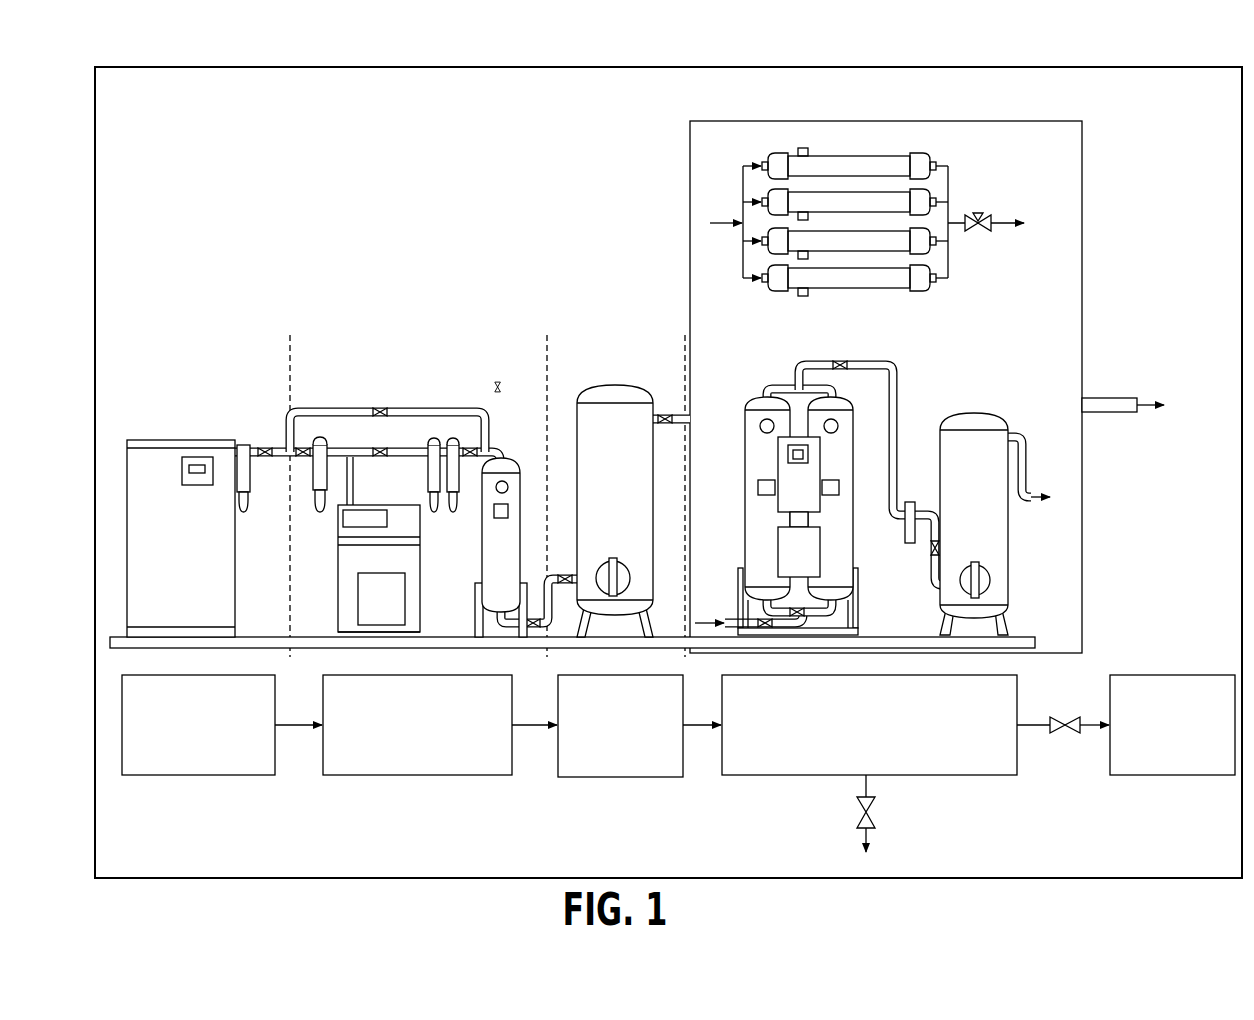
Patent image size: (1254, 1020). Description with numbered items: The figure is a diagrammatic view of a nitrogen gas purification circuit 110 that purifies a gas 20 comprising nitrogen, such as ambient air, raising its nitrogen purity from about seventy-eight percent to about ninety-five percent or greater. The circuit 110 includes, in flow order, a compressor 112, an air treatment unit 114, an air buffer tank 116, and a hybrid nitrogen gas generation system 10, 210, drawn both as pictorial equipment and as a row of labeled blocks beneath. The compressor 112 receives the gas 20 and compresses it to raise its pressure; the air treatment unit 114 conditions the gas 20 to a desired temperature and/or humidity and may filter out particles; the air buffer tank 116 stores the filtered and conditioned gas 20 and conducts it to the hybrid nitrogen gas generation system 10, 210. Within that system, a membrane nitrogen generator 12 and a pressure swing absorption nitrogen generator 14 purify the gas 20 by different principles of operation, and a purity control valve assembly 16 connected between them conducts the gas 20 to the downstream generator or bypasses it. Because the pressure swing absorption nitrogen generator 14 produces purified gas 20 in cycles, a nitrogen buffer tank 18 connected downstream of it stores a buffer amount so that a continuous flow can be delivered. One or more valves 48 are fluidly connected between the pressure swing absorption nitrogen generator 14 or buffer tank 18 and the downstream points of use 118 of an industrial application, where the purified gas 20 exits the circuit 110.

The nitrogen gas purification circuit 110 is at (228, 50).
The compressor 112 is at (192, 777).
The air treatment unit 114 is at (418, 777).
The air buffer tank 116 is at (622, 777).
The hybrid nitrogen gas generation system 10 is at (760, 777).
The hybrid nitrogen gas generation system 210 is at (936, 488).
The membrane nitrogen generator 12 is at (957, 162).
The pressure swing absorption nitrogen generator 14 is at (764, 379).
The nitrogen buffer tank 18 is at (976, 400).
The gas 20 is at (1141, 398).
The valve 48 is at (1071, 717).
The purity control valve assembly 16 is at (879, 812).
The point of use 118 is at (1180, 777).